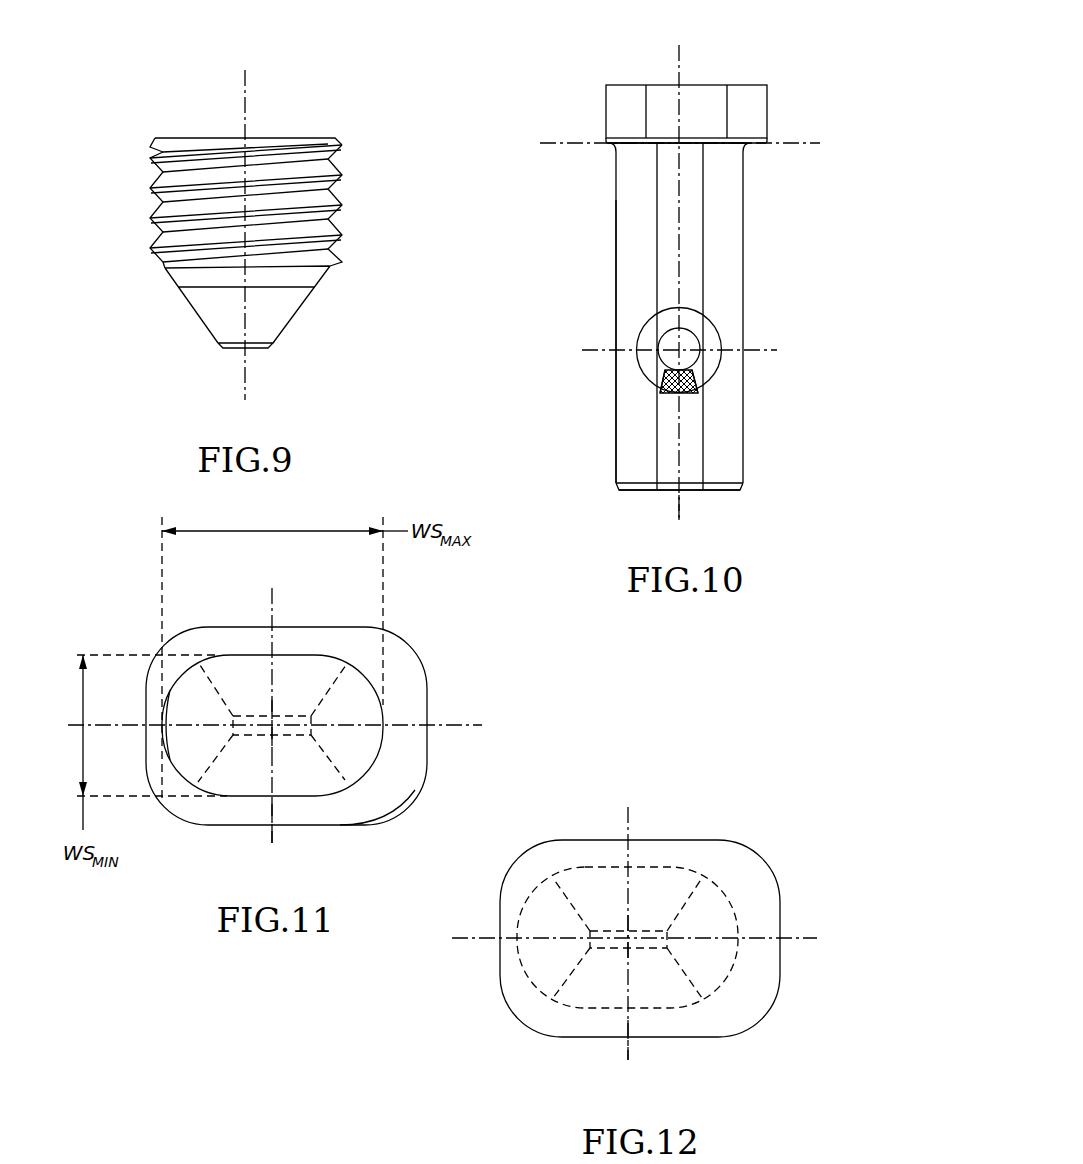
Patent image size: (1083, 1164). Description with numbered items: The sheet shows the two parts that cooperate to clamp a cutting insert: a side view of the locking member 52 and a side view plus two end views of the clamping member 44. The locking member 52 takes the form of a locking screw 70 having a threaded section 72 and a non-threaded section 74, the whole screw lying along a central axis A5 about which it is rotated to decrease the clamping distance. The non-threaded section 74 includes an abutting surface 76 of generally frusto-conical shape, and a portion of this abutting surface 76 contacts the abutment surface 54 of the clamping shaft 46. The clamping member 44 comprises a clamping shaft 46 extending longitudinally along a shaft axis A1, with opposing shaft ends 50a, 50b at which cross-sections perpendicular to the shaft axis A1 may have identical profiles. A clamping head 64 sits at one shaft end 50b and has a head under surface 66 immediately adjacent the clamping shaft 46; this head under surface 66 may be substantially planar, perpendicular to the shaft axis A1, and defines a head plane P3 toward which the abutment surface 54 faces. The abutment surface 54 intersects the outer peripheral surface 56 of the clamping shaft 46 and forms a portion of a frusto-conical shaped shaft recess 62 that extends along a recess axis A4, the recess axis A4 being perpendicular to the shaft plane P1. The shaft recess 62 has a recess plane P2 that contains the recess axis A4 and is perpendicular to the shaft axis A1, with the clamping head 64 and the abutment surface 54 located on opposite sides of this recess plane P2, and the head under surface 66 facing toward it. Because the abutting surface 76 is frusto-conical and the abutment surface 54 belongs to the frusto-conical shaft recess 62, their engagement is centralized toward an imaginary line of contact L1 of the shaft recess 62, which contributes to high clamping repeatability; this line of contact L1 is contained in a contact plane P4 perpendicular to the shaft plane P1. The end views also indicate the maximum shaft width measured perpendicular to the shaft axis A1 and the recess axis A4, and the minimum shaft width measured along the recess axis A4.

In FIG. 10, the clamping member 44 is at (570, 228).
In FIG. 11, the clamping member 44 is at (435, 667).
In FIG. 12, the clamping member 44 is at (792, 880).
In FIG. 10, the clamping shaft 46 is at (717, 275).
In FIG. 11, the clamping shaft 46 is at (380, 757).
In FIG. 12, the clamping shaft 46 is at (720, 987).
In FIG. 10, the shaft end 50a is at (640, 482).
In FIG. 11, the shaft end 50a is at (200, 757).
In FIG. 10, the shaft end 50b is at (643, 148).
In FIG. 9, the locking member 52 is at (358, 153).
In FIG. 10, the abutment surface 54 is at (688, 393).
In FIG. 11, the abutment surface 54 is at (278, 670).
In FIG. 12, the abutment surface 54 is at (637, 893).
In FIG. 10, the outer peripheral surface 56 is at (615, 317).
In FIG. 10, the shaft recess 62 is at (707, 342).
In FIG. 11, the shaft recess 62 is at (227, 680).
In FIG. 12, the shaft recess 62 is at (577, 890).
In FIG. 10, the clamping head 64 is at (704, 110).
In FIG. 11, the clamping head 64 is at (427, 703).
In FIG. 12, the clamping head 64 is at (783, 918).
In FIG. 10, the head under surface 66 is at (755, 150).
In FIG. 11, the head under surface 66 is at (382, 795).
In FIG. 9, the locking screw 70 is at (353, 213).
In FIG. 9, the threaded section 72 is at (152, 207).
In FIG. 9, the non-threaded section 74 is at (188, 310).
In FIG. 9, the abutting surface 76 is at (255, 313).
In FIG. 10, the shaft axis A1 is at (676, 522).
In FIG. 11, the shaft axis A1 is at (273, 727).
In FIG. 12, the shaft axis A1 is at (627, 938).
In FIG. 10, the recess axis A4 is at (679, 350).
In FIG. 11, the recess axis A4 is at (268, 845).
In FIG. 12, the recess axis A4 is at (625, 1056).
In FIG. 9, the central axis A5 is at (243, 223).
In FIG. 10, the imaginary line of contact L1 is at (657, 390).
In FIG. 11, the shaft plane P1 is at (289, 725).
In FIG. 12, the shaft plane P1 is at (649, 938).
In FIG. 10, the recess plane P2 is at (695, 350).
In FIG. 10, the head plane P3 is at (694, 143).
In FIG. 10, the contact plane P4 is at (681, 270).
In FIG. 11, the contact plane P4 is at (274, 703).
In FIG. 12, the contact plane P4 is at (630, 920).